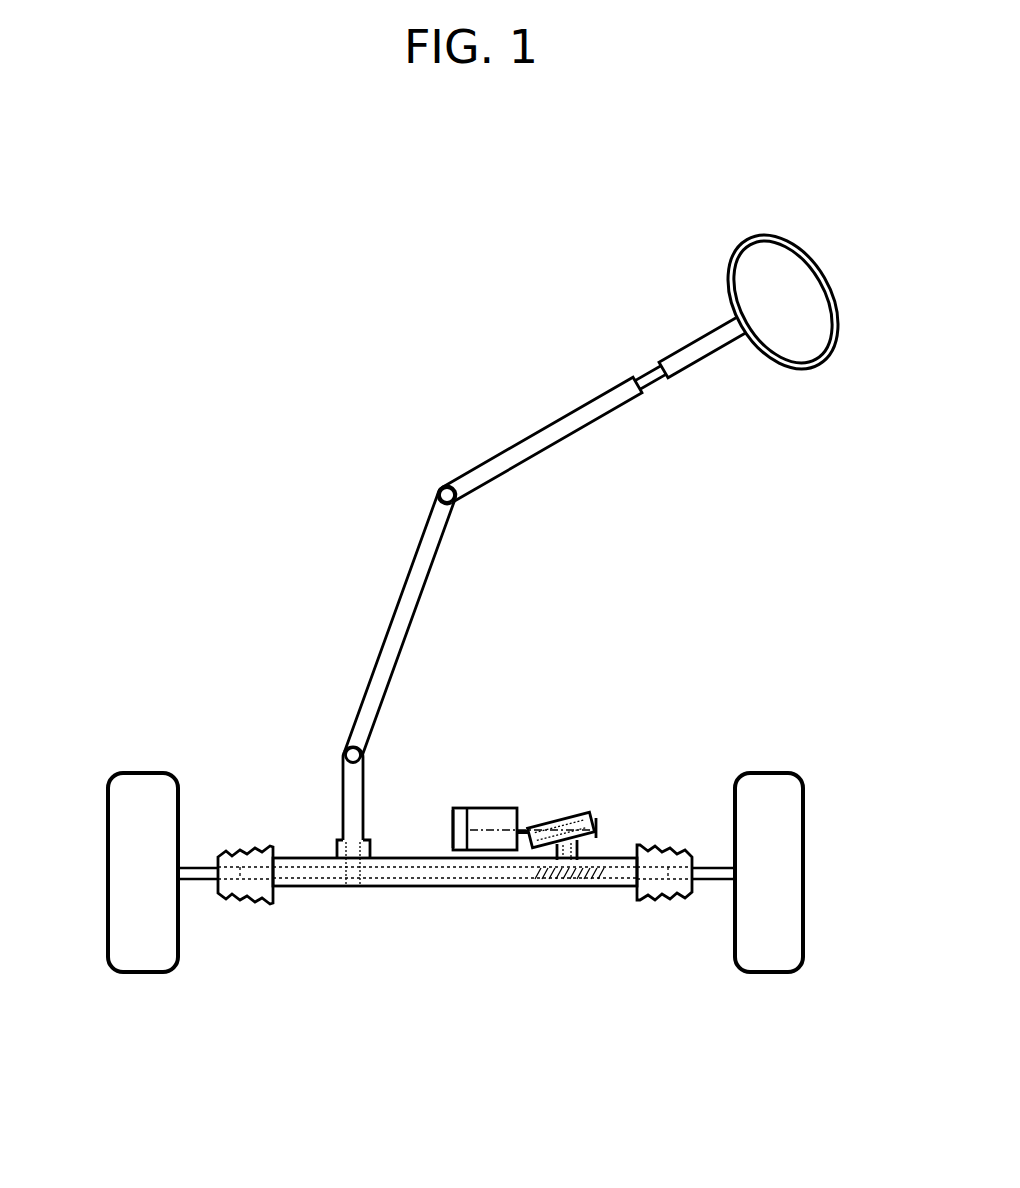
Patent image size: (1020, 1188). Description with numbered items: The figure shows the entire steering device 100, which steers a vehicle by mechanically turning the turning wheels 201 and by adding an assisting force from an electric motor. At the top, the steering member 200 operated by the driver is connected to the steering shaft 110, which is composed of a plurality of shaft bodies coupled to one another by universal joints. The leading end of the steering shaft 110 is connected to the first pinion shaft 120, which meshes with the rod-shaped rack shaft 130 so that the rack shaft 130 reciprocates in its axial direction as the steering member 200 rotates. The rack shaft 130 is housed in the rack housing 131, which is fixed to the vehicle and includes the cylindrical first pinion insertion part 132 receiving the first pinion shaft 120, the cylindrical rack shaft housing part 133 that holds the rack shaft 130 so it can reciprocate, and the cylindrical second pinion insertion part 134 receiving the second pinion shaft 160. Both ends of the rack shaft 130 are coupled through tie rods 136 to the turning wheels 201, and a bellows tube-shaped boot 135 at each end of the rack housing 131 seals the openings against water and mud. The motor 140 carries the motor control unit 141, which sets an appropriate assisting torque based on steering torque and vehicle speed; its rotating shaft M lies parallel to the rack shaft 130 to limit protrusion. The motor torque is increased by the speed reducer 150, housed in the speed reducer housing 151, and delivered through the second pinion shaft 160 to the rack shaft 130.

The steering device 100 is at (358, 460).
The steering shaft 110 is at (395, 604).
The first pinion shaft 120 is at (350, 887).
The rack shaft 130 is at (425, 872).
The rack housing 131 is at (502, 888).
The first pinion insertion part 132 is at (336, 846).
The rack shaft housing part 133 is at (388, 888).
The second pinion insertion part 134 is at (579, 847).
The boot 135 is at (245, 902).
The tie rod 136 is at (712, 886).
The motor 140 is at (503, 808).
The motor control unit 141 is at (458, 808).
The rotating shaft M is at (447, 832).
The speed reducer 150 is at (572, 812).
The speed reducer housing 151 is at (596, 818).
The second pinion shaft 160 is at (575, 888).
The steering member 200 is at (746, 234).
The turning wheel 201 is at (135, 772).